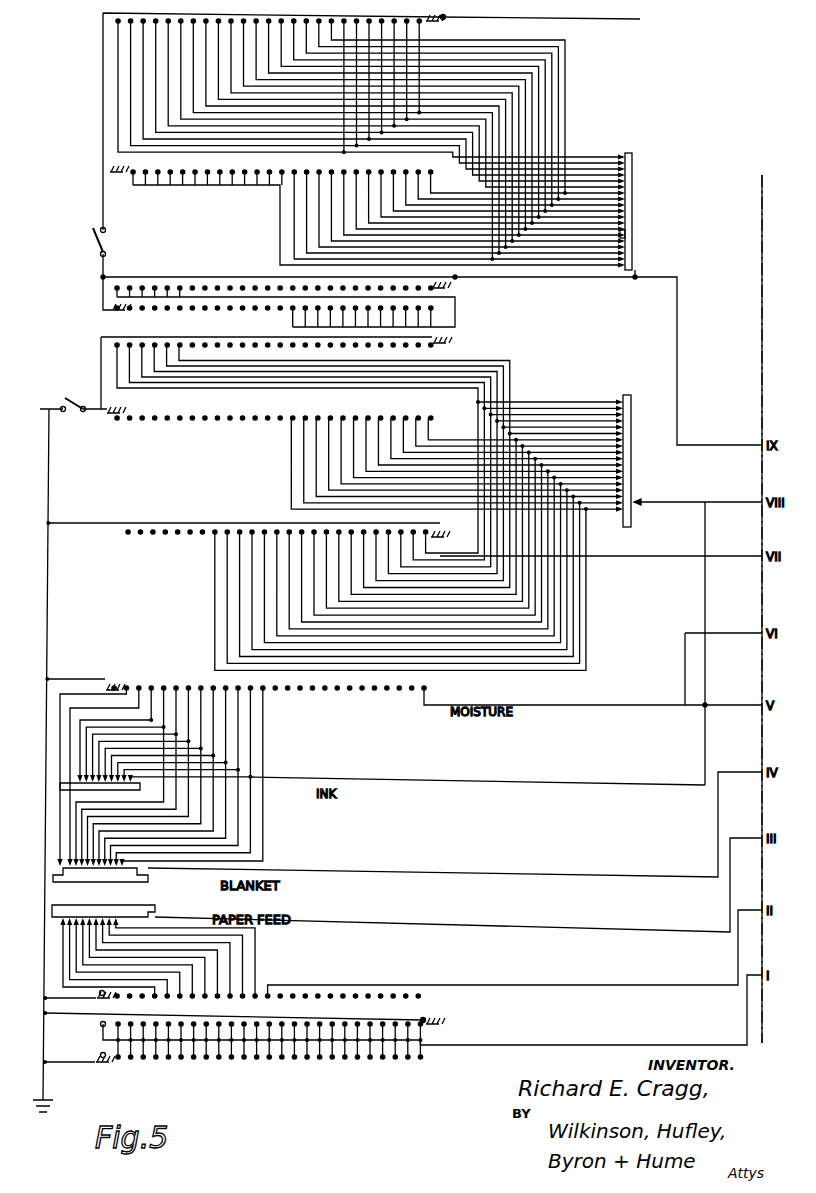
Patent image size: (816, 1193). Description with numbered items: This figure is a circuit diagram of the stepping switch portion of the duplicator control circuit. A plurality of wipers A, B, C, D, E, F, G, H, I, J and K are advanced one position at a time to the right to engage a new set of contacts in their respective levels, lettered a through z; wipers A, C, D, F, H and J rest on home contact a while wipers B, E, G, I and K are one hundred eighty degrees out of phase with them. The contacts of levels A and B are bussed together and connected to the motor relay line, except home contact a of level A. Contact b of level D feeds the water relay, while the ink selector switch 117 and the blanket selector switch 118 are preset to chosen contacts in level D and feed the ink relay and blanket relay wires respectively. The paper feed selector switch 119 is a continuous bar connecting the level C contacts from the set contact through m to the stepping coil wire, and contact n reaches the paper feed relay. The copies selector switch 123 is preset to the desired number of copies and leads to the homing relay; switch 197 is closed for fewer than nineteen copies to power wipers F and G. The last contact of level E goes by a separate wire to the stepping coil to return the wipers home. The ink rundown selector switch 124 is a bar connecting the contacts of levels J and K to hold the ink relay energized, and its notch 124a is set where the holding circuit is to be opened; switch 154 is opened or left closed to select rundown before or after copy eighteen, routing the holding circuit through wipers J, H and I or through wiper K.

The ink selector switch 117 is at (62, 790).
The blanket selector switch 118 is at (53, 882).
The paper feed selector switch 119 is at (52, 910).
The copies selector switch 123 is at (632, 472).
The ink rundown selector switch 124 is at (634, 250).
The notch of selector switch 124 124a is at (631, 236).
The ink rundown switch 154 is at (92, 242).
The copies range switch 197 is at (54, 406).
The wiper A is at (95, 1064).
The wiper B is at (445, 1016).
The wiper C is at (95, 993).
The wiper D is at (106, 688).
The wiper E is at (445, 535).
The wiper F is at (115, 424).
The wiper G is at (447, 345).
The wiper H is at (112, 311).
The wiper I is at (447, 287).
The wiper J is at (110, 171).
The wiper K is at (441, 18).